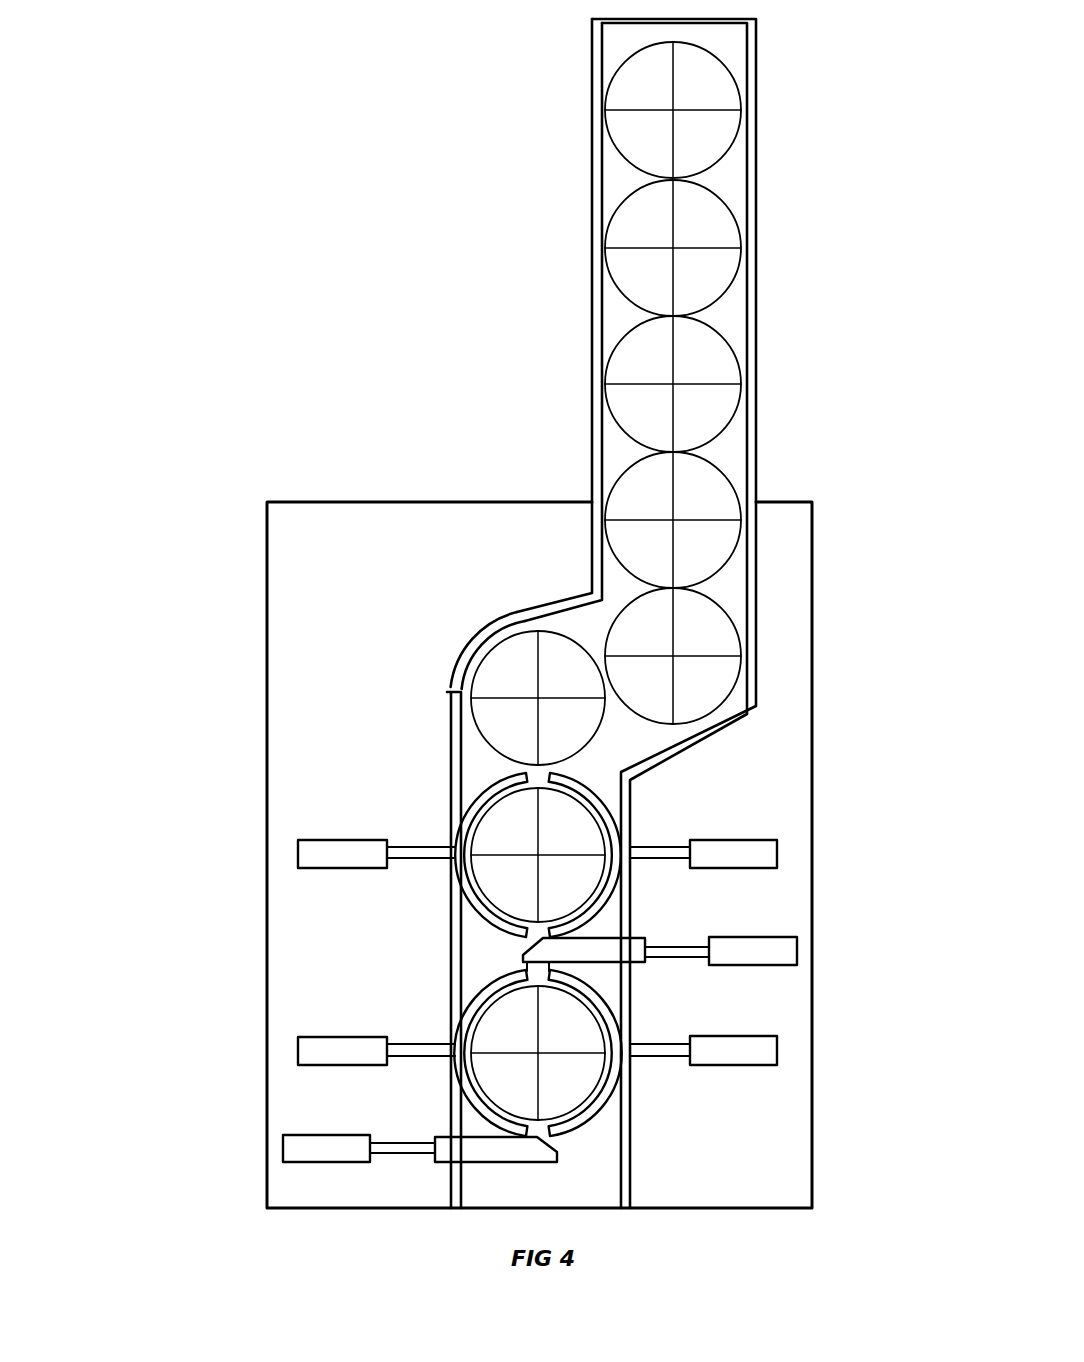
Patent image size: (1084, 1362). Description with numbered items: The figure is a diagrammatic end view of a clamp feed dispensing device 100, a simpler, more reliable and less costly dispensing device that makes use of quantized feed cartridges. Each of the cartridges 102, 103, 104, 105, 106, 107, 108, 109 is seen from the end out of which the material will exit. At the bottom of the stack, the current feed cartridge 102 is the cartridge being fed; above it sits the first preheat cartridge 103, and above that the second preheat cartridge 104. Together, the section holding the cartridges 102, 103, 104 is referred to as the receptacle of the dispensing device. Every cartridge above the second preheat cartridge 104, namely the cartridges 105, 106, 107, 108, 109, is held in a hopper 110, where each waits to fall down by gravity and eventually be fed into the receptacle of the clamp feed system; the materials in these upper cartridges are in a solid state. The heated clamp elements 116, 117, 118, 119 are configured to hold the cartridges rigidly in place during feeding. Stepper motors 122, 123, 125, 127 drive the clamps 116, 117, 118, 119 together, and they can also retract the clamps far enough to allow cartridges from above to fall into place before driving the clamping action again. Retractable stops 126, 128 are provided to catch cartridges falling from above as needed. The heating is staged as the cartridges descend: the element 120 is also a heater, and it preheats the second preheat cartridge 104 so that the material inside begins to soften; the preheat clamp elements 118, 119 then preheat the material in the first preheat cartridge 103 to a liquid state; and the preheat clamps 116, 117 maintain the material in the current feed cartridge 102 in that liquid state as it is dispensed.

The clamp feed dispensing device 100 is at (273, 222).
The current feed cartridge 102 is at (510, 1040).
The first preheat cartridge 103 is at (510, 845).
The second preheat cartridge 104 is at (485, 685).
The cartridge 105 is at (722, 672).
The cartridge 106 is at (622, 505).
The cartridge 107 is at (722, 400).
The cartridge 108 is at (613, 233).
The cartridge 109 is at (722, 125).
The hopper 110 is at (592, 53).
The heated clamp element 116 is at (495, 1118).
The heated clamp element 117 is at (605, 1003).
The heated clamp element 118 is at (485, 792).
The heated clamp element 119 is at (605, 807).
The heater 120 is at (487, 618).
The stepper motor 122 is at (317, 1050).
The stepper motor 123 is at (765, 1048).
The stepper motor 125 is at (317, 853).
The retractable stop 126 is at (550, 1150).
The stepper motor 127 is at (765, 852).
The retractable stop 128 is at (547, 948).